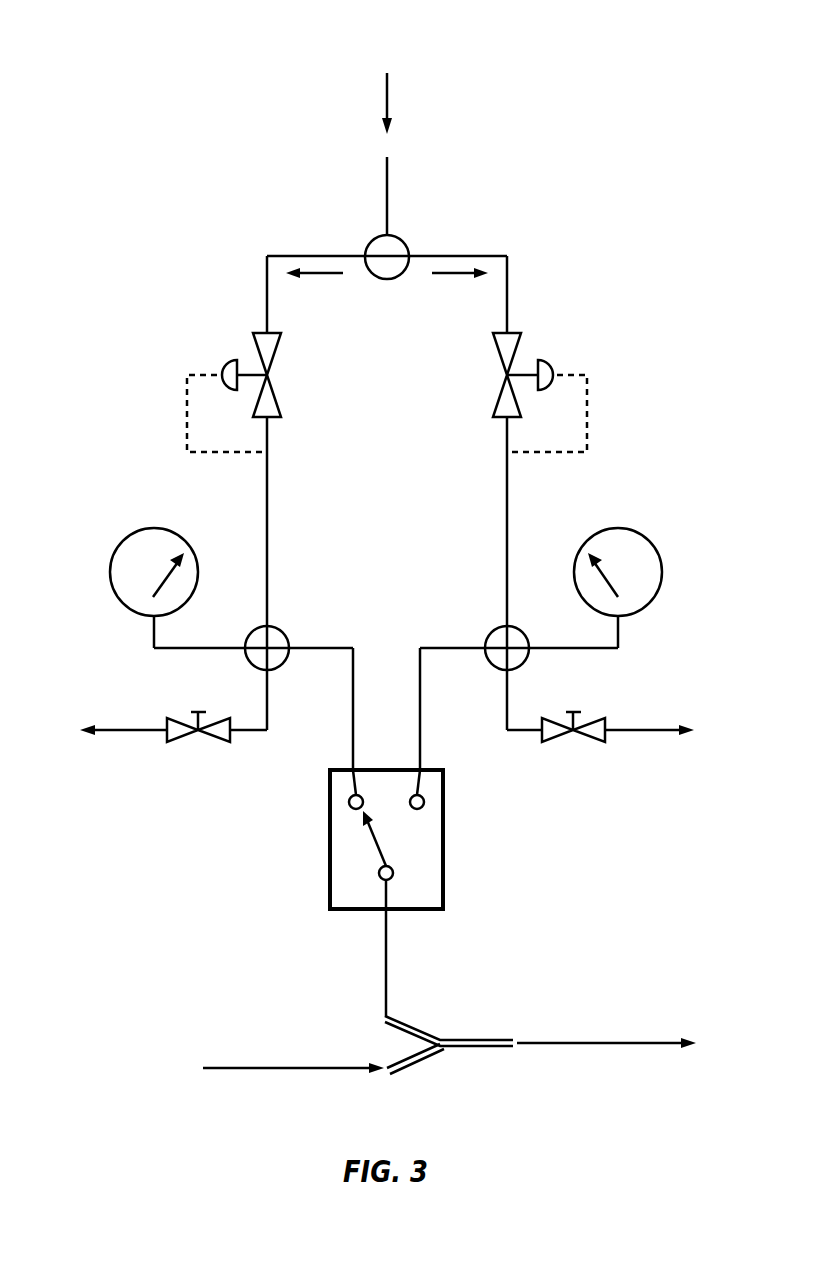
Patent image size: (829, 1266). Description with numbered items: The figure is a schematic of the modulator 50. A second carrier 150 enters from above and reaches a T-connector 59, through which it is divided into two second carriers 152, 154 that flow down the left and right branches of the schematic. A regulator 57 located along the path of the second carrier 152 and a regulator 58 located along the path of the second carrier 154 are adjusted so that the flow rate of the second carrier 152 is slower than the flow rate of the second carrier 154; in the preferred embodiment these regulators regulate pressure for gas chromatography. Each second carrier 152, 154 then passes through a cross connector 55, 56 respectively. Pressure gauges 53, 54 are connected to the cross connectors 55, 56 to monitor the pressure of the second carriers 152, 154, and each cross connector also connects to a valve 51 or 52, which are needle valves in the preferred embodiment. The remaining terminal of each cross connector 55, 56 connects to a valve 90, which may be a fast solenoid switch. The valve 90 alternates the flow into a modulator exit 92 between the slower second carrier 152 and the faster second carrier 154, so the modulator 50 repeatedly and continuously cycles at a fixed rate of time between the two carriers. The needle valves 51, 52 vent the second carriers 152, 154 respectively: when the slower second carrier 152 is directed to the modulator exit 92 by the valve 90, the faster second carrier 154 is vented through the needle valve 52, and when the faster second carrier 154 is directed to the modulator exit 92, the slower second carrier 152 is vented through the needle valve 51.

The modulator 50 is at (216, 59).
The second carrier 150 is at (392, 104).
The T-connector 59 is at (366, 244).
The second carrier 152 is at (317, 278).
The second carrier 154 is at (456, 278).
The regulator 57 is at (268, 355).
The regulator 58 is at (505, 355).
The pressure gauge 53 is at (108, 572).
The pressure gauge 54 is at (663, 572).
The cross connector 55 is at (276, 628).
The cross connector 56 is at (497, 628).
The needle valve 51 is at (167, 738).
The needle valve 52 is at (607, 738).
The valve 90 is at (444, 862).
The modulator exit 92 is at (386, 967).